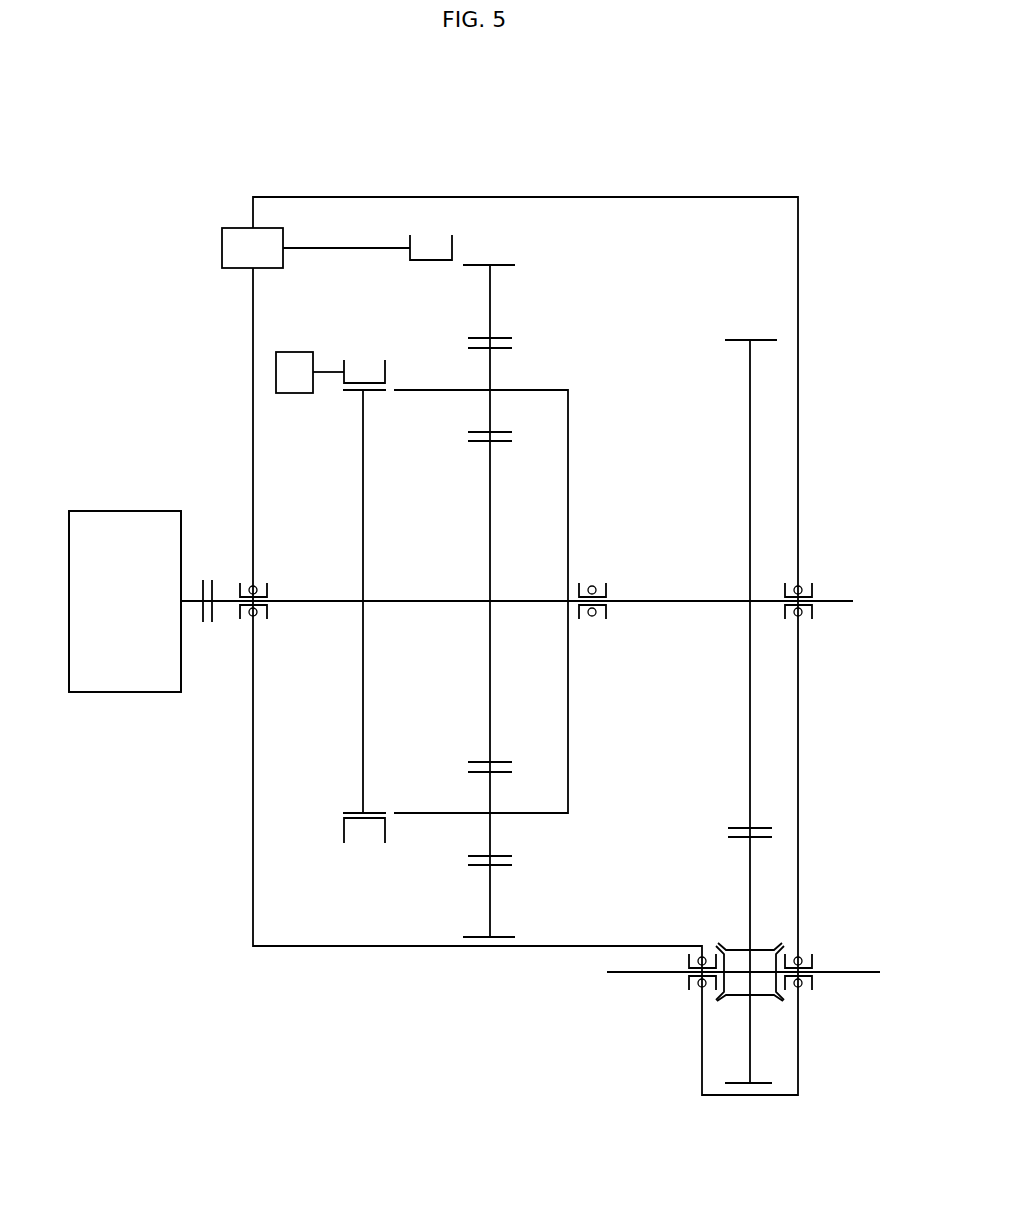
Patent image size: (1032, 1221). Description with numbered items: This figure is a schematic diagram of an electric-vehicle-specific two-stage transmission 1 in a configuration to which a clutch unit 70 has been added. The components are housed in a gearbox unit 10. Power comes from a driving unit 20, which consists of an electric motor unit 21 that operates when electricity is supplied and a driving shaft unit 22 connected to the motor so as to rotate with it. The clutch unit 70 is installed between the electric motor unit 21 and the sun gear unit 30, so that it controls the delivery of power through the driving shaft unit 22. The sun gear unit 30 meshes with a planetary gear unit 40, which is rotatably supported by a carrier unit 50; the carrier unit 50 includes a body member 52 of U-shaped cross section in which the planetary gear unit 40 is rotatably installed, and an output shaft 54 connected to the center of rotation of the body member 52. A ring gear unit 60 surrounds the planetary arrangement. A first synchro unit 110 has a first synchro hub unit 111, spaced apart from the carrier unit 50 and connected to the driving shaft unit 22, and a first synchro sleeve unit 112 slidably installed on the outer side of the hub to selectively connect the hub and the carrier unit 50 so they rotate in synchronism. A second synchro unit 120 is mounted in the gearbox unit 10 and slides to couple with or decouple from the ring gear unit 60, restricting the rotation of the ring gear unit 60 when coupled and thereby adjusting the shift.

The electric-vehicle-specific two-stage transmission 1 is at (833, 88).
The gearbox unit 10 is at (305, 948).
The driving unit 20 is at (205, 800).
The electric motor unit 21 is at (103, 694).
The driving shaft unit 22 is at (226, 607).
The sun gear unit 30 is at (496, 550).
The planetary gear unit 40 is at (497, 368).
The carrier unit 50 is at (712, 521).
The body member 52 is at (572, 537).
The output shaft 54 is at (701, 598).
The ring gear unit 60 is at (497, 300).
The clutch unit 70 is at (212, 578).
The first synchro unit 110 is at (272, 344).
The first synchro hub unit 111 is at (362, 443).
The first synchro sleeve unit 112 is at (386, 360).
The second synchro unit 120 is at (264, 212).